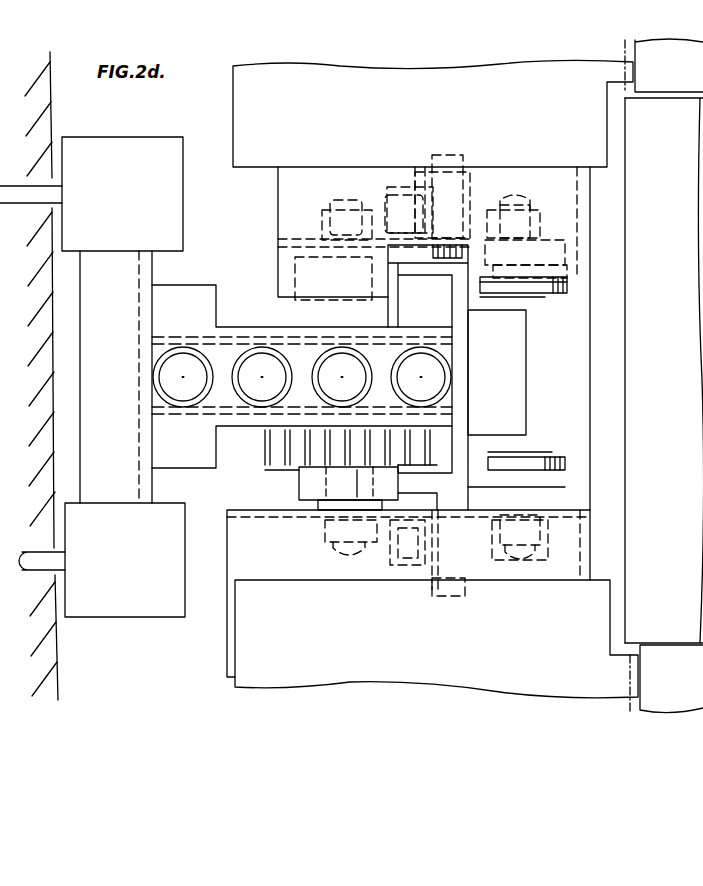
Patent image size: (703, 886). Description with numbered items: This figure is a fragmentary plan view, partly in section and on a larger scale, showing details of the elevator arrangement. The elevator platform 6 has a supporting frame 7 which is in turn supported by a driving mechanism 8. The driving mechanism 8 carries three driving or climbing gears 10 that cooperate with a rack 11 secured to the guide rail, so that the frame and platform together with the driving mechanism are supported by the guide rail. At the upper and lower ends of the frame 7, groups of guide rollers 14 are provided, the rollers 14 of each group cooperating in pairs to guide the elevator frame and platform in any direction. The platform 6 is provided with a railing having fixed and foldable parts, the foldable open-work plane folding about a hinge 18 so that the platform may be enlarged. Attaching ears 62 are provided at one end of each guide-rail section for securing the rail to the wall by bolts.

The elevator platform 6 is at (667, 420).
The supporting frame 7 is at (611, 416).
The driving mechanism 8 is at (222, 630).
The driving gear 10 is at (276, 459).
The rack 11 is at (433, 425).
The guide roller 14 is at (310, 487).
The hinge 18 is at (625, 715).
The attaching ear 62 is at (109, 151).